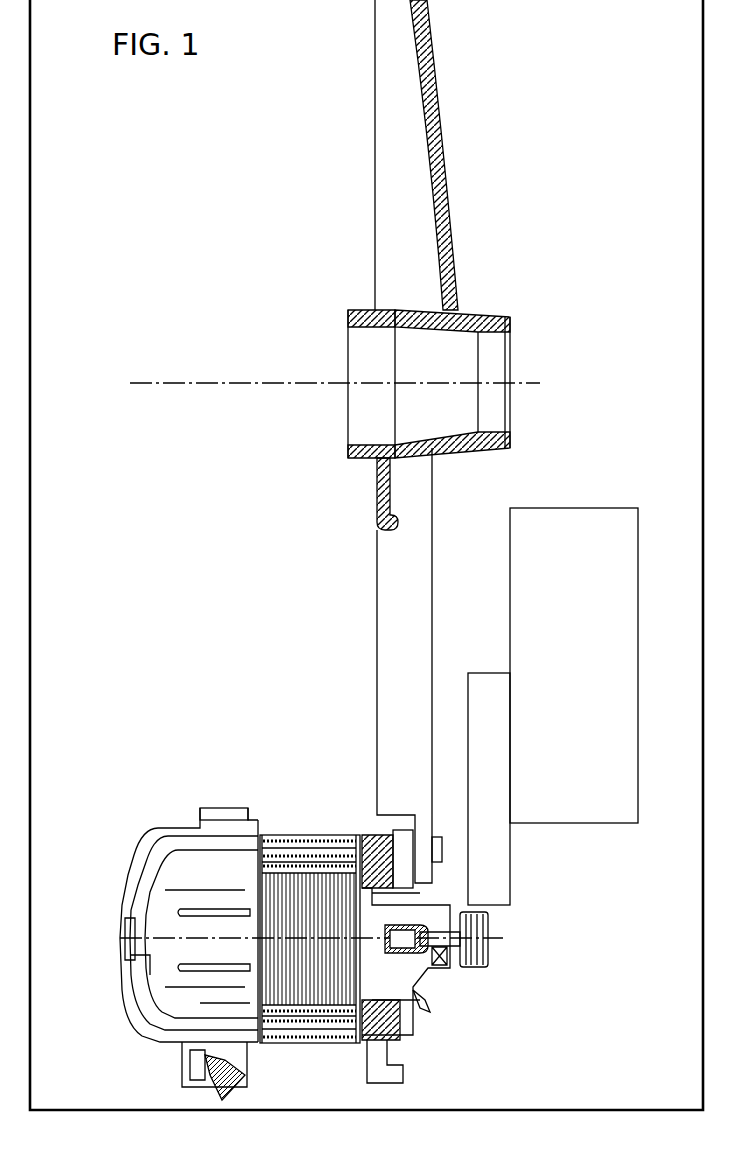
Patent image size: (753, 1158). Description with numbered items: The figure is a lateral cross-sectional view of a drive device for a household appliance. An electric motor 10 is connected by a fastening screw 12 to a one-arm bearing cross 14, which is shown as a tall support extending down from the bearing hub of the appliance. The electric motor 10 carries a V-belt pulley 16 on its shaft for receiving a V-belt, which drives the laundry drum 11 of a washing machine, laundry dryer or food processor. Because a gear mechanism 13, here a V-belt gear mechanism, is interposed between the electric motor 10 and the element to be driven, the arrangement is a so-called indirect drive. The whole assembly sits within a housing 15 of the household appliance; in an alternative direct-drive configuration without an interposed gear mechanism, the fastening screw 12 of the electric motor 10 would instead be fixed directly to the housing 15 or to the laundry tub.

The electric motor 10 is at (293, 835).
The laundry drum 11 is at (575, 508).
The fastening screw 12 is at (442, 848).
The gear mechanism 13 is at (510, 860).
The one-arm bearing cross 14 is at (432, 577).
The housing 15 is at (30, 651).
The V-belt pulley 16 is at (490, 925).